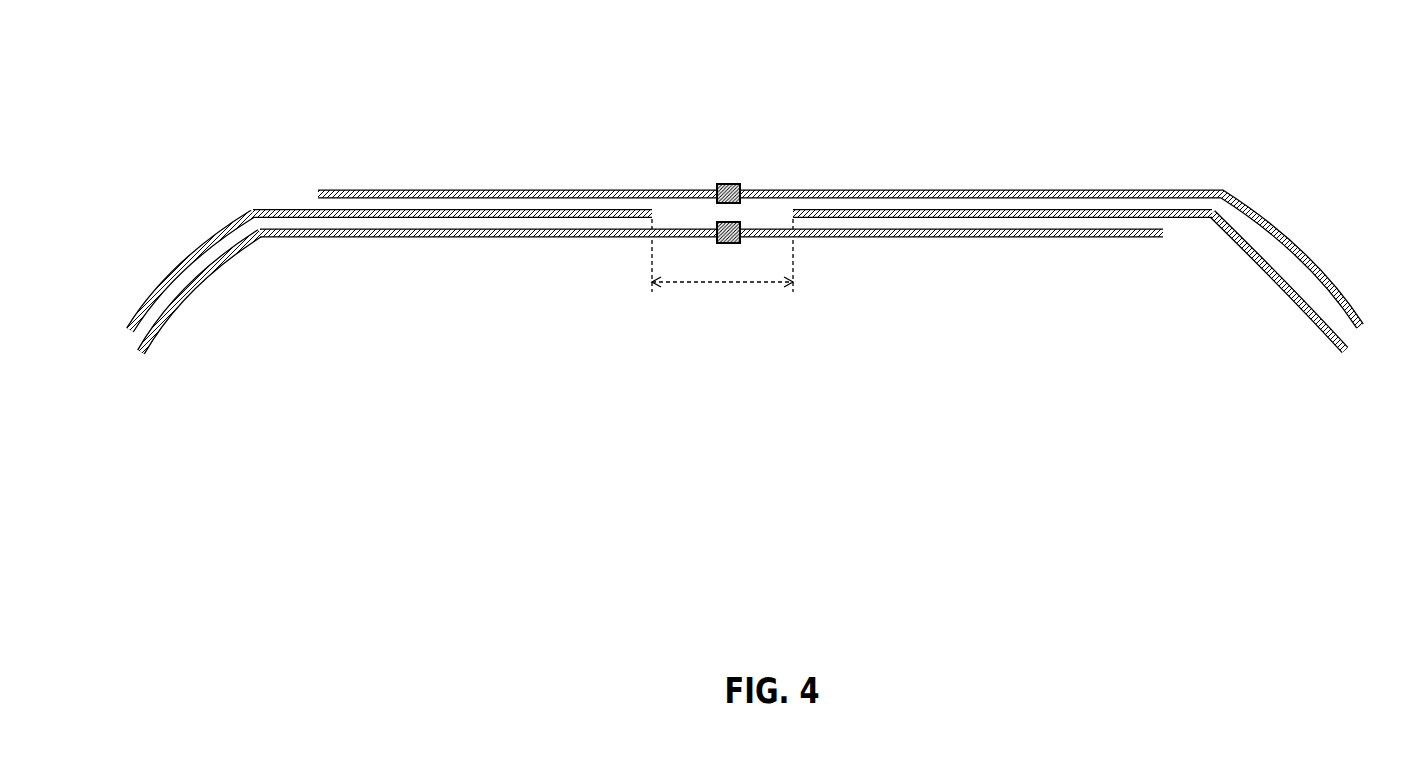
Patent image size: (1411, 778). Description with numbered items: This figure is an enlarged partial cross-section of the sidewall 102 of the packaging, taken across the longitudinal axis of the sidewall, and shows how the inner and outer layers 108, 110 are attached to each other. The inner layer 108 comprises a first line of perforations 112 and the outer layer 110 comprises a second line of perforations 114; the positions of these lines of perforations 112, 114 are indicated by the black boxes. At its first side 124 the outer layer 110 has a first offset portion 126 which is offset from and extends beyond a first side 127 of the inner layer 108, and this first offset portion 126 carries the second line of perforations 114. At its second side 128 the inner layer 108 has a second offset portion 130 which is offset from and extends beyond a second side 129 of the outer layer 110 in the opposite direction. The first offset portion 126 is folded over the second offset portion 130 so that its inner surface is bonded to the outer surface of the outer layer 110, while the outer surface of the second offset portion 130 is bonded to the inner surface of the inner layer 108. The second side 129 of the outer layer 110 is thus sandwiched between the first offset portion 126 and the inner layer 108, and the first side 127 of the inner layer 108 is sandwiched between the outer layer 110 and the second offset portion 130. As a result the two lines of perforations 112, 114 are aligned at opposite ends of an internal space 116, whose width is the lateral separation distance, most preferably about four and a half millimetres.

The sidewall 102 is at (1104, 51).
The inner layer 108 is at (155, 340).
The outer layer 110 is at (163, 280).
The first line of perforations 112 is at (738, 243).
The second line of perforations 114 is at (727, 183).
The internal space 116 is at (695, 212).
The first side of the outer layer 124 is at (318, 193).
The first offset portion 126 is at (433, 190).
The first side of the inner layer 127 is at (790, 205).
The second side of the inner layer 128 is at (1163, 239).
The second side of the outer layer 129 is at (656, 205).
The second offset portion 130 is at (1040, 239).